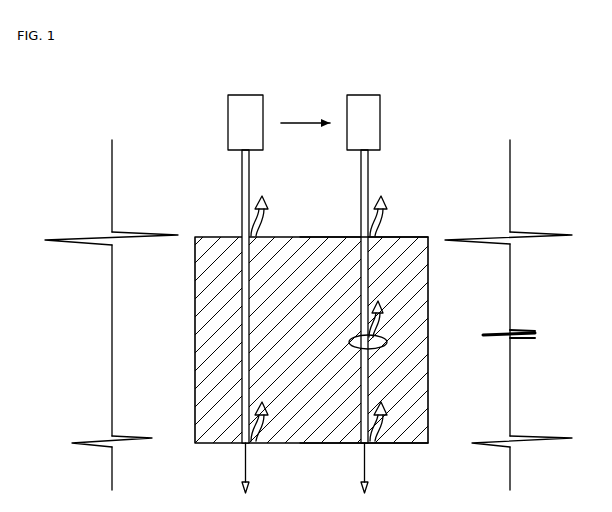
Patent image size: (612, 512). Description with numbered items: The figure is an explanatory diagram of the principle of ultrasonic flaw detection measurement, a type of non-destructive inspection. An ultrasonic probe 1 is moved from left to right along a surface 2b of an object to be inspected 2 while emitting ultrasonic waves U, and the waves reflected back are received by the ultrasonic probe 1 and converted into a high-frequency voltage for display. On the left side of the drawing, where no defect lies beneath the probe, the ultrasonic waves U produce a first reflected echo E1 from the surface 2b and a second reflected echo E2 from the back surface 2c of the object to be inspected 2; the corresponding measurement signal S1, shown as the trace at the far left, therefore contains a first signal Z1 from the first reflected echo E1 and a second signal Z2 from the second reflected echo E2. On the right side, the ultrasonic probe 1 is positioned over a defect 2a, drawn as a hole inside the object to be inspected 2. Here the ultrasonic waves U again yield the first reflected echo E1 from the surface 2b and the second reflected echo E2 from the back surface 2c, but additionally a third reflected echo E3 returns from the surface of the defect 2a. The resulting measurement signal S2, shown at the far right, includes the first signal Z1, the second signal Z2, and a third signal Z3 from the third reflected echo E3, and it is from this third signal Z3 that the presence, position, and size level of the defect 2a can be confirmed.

The ultrasonic probe 1 is at (244, 98).
The object to be inspected 2 is at (314, 235).
The defect 2a is at (388, 341).
The surface 2b is at (405, 237).
The back surface 2c is at (405, 446).
The ultrasonic waves U is at (242, 176).
The first reflected echo E1 is at (267, 212).
The second reflected echo E2 is at (267, 418).
The third reflected echo E3 is at (384, 306).
The measurement signal S1 is at (112, 134).
The measurement signal S2 is at (510, 134).
The first signal Z1 is at (44, 228).
The second signal Z2 is at (70, 433).
The third signal Z3 is at (540, 326).